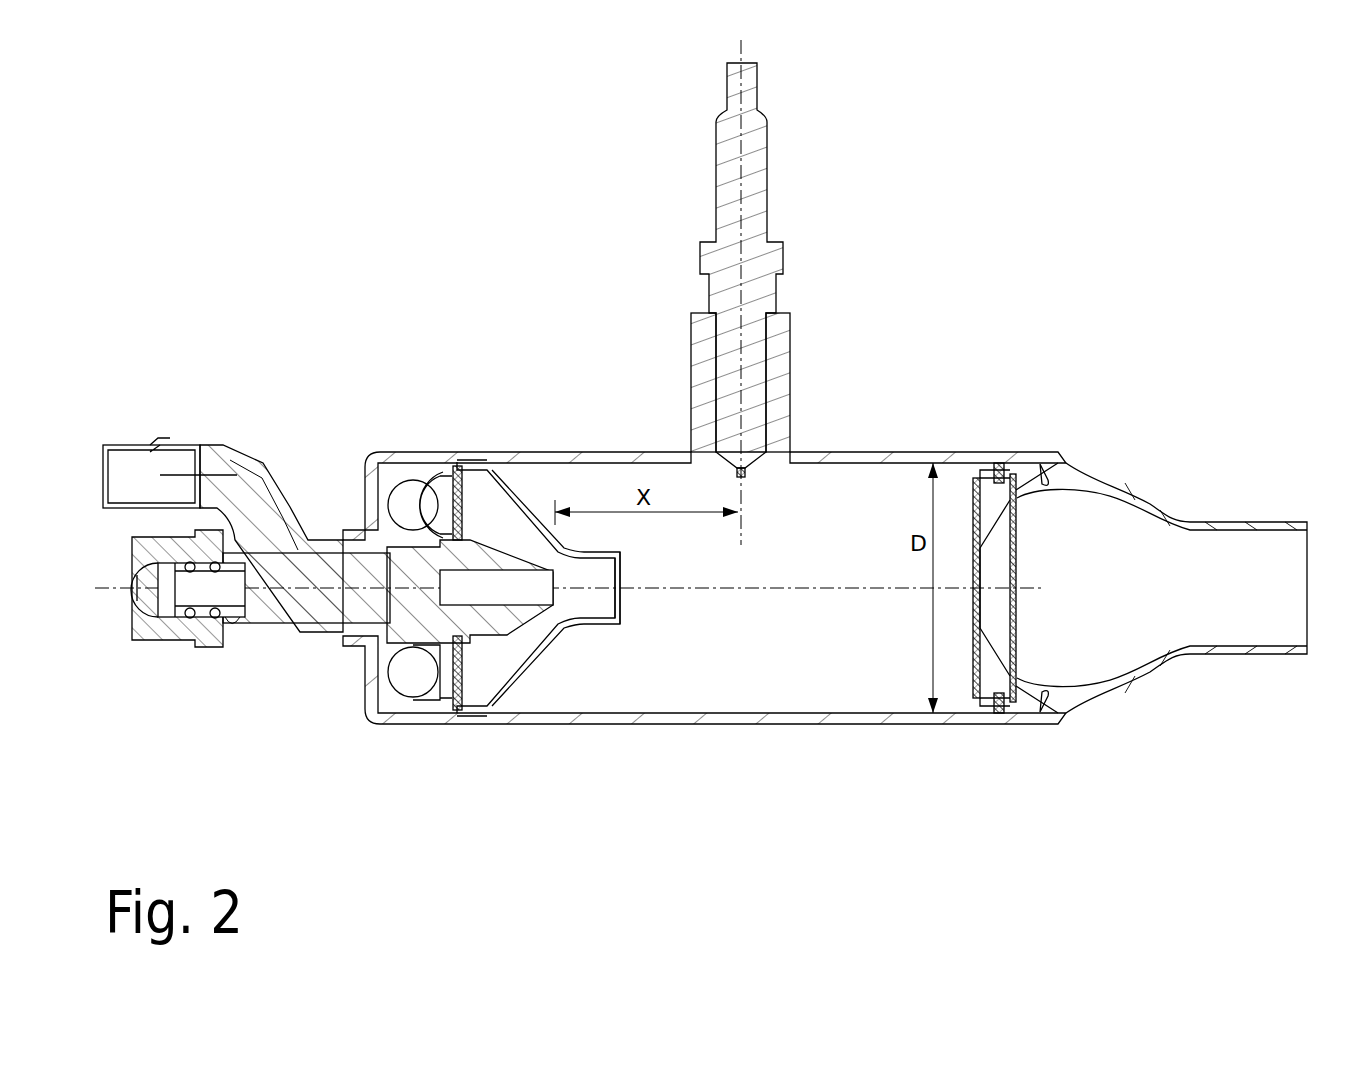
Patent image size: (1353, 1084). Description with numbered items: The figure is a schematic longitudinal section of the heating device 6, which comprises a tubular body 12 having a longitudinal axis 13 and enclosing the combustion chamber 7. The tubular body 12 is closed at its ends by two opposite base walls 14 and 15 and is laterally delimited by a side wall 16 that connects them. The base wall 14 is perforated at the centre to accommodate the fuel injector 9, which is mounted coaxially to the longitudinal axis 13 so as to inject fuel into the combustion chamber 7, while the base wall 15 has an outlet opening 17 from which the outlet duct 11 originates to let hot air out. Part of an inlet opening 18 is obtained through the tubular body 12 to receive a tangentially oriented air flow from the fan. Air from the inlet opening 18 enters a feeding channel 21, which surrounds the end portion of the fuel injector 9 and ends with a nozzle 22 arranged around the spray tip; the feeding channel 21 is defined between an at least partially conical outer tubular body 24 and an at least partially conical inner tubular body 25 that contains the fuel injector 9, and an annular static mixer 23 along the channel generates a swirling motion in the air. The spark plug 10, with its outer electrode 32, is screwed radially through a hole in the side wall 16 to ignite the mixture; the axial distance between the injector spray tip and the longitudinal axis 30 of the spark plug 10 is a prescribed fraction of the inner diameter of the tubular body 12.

The heating device 6 is at (1148, 238).
The combustion chamber 7 is at (778, 643).
The fuel injector 9 is at (302, 610).
The spark plug 10 is at (750, 370).
The outlet duct 11 is at (1235, 655).
The tubular body 12 is at (634, 845).
The longitudinal axis 13 is at (133, 592).
The base wall 14 is at (373, 508).
The base wall 15 is at (1020, 477).
The side wall 16 is at (848, 725).
The outlet opening 17 is at (1010, 601).
The inlet opening 18 is at (415, 500).
The feeding channel 21 is at (413, 671).
The nozzle 22 is at (640, 613).
The static mixer 23 is at (465, 700).
The outer tubular body 24 is at (533, 515).
The inner tubular body 25 is at (483, 555).
The longitudinal axis of the spark plug 30 is at (745, 185).
The outer electrode 32 is at (746, 472).